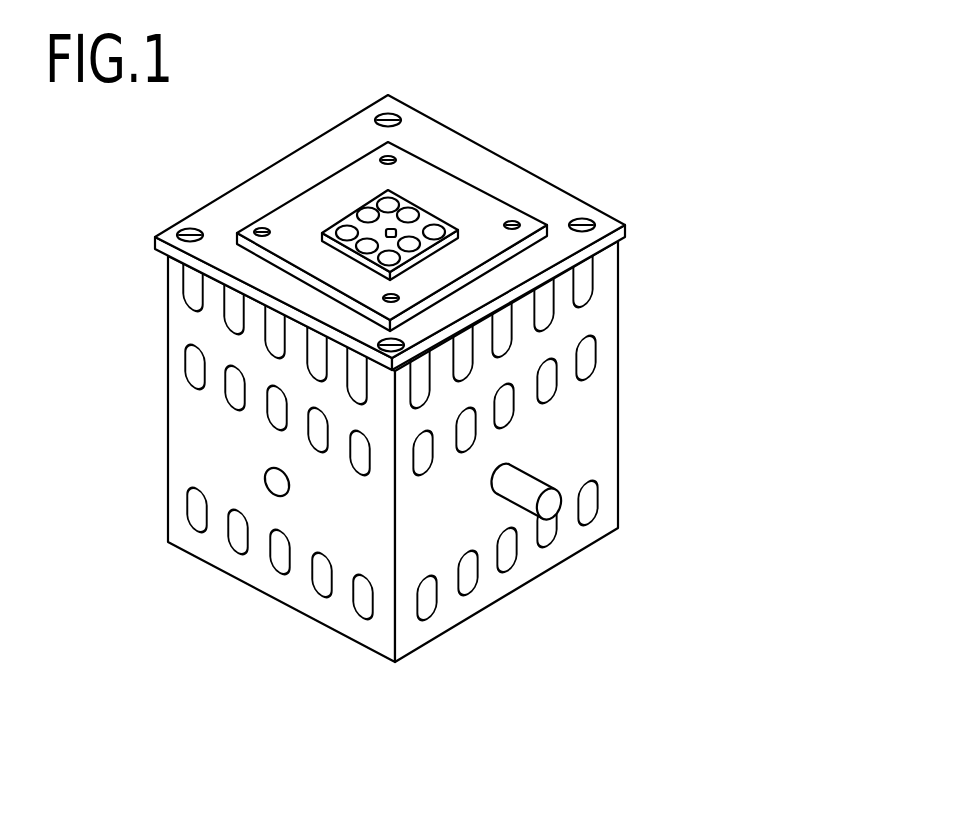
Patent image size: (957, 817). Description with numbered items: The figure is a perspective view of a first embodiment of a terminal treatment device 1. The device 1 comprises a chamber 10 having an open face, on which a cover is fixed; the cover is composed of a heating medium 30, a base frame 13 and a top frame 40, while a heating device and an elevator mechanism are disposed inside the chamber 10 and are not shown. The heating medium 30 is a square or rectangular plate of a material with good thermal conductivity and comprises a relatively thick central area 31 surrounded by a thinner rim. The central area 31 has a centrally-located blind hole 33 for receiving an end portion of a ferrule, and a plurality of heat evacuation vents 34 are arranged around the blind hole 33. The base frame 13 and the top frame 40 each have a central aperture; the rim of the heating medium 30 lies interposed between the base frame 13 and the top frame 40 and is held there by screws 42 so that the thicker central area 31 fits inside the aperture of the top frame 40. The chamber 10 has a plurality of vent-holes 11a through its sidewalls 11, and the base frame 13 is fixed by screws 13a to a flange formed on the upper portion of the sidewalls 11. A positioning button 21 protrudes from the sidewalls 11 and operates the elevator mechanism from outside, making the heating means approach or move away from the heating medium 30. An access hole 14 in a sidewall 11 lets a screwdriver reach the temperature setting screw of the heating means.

The terminal treatment device 1 is at (584, 104).
The chamber 10 is at (160, 414).
The sidewalls 11 is at (604, 433).
The vent-holes 11a is at (189, 300).
The base frame 13 is at (557, 197).
The screws 13a is at (590, 218).
The access hole 14 is at (288, 496).
The positioning button 21 is at (530, 495).
The heating medium 30 is at (400, 203).
The central area 31 is at (347, 257).
The blind hole 33 is at (373, 213).
The heat evacuation vents 34 is at (343, 233).
The top frame 40 is at (345, 229).
The screws 42 is at (513, 222).